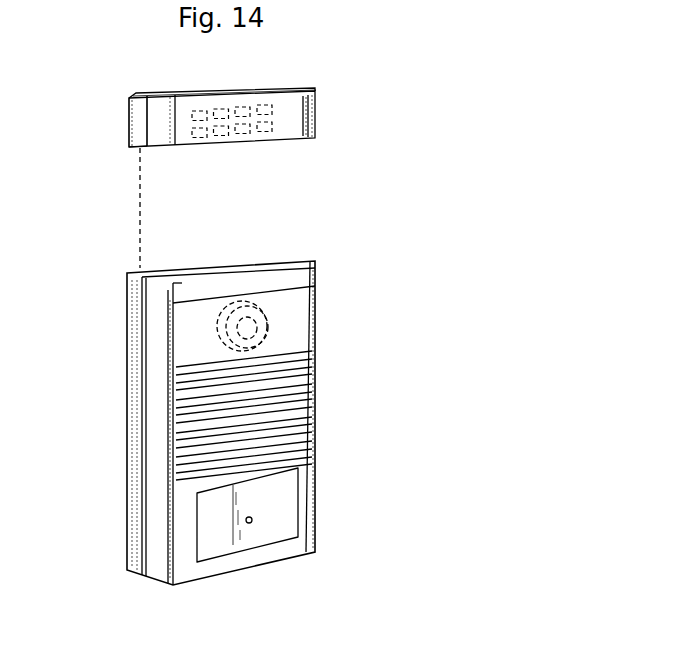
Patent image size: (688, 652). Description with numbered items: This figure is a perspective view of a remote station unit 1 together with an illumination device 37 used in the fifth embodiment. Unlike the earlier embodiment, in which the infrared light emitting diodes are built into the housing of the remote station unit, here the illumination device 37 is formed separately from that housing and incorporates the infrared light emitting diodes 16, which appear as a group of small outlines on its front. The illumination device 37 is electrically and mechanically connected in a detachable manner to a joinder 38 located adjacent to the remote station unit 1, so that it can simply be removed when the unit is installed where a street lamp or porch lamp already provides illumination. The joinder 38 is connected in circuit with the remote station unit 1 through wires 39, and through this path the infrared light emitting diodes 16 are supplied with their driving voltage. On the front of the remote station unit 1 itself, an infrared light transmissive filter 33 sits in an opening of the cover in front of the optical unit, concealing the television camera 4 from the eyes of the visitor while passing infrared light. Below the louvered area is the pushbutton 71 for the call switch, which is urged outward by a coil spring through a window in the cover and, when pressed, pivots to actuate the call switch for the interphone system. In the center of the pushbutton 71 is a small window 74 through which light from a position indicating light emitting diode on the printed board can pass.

The remote station unit 1 is at (132, 403).
The television camera 4 is at (262, 330).
The infrared light emitting diodes 16 is at (263, 133).
The infrared light transmissive filter 33 is at (303, 313).
The illumination device 37 is at (315, 91).
The joinder 38 is at (128, 122).
The wires 39 is at (140, 207).
The pushbutton 71 is at (280, 495).
The window 74 is at (252, 522).